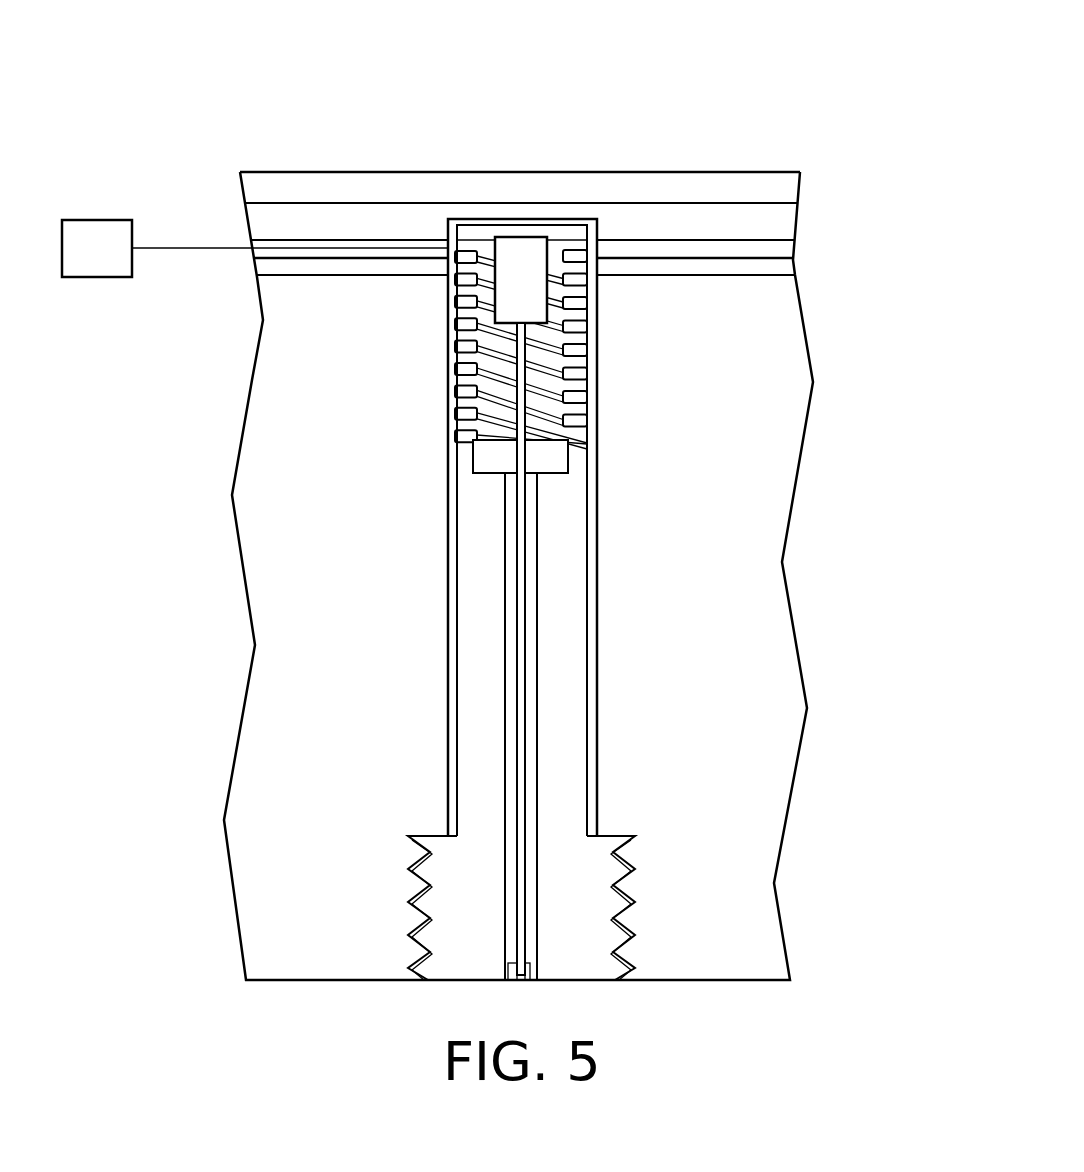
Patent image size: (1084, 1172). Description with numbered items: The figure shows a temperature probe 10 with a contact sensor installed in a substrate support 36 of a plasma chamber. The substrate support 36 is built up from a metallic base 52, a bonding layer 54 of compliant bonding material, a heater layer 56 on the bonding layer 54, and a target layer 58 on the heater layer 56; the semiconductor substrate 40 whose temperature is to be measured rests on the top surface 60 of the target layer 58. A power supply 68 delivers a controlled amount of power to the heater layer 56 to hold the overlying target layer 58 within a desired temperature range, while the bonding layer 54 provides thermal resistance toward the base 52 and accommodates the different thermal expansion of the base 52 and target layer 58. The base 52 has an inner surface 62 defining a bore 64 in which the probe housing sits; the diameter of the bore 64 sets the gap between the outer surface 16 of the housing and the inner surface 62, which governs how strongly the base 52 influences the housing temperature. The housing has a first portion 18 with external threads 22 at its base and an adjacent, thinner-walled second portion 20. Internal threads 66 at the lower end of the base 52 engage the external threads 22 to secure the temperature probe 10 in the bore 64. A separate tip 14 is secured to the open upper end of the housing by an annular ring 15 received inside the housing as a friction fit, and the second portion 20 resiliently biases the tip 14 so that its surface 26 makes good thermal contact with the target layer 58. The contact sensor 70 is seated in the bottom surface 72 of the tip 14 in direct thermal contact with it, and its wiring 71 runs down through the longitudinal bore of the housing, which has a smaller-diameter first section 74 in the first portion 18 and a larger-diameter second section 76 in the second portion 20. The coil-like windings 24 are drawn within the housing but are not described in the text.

The temperature probe 10 is at (610, 583).
The tip 14 is at (523, 205).
The annular ring 15 is at (448, 275).
The outer surface 16 is at (597, 627).
The first portion 18 is at (610, 746).
The second portion 20 is at (596, 349).
The external threads 22 is at (428, 874).
The coil windings 24 is at (583, 322).
The surface 26 is at (482, 219).
The substrate support 36 is at (800, 503).
The semiconductor substrate 40 is at (753, 188).
The base 52 is at (800, 745).
The bonding layer 54 is at (795, 266).
The heater layer 56 is at (795, 250).
The target layer 58 is at (795, 222).
The top surface 60 is at (678, 203).
The inner surface 62 is at (590, 520).
The bore 64 is at (597, 688).
The internal threads 66 is at (417, 853).
The power supply 68 is at (110, 277).
The contact sensor 70 is at (535, 285).
The wiring 71 is at (527, 810).
The bottom surface 72 is at (556, 237).
The first section 74 is at (517, 590).
The second section 76 is at (483, 460).